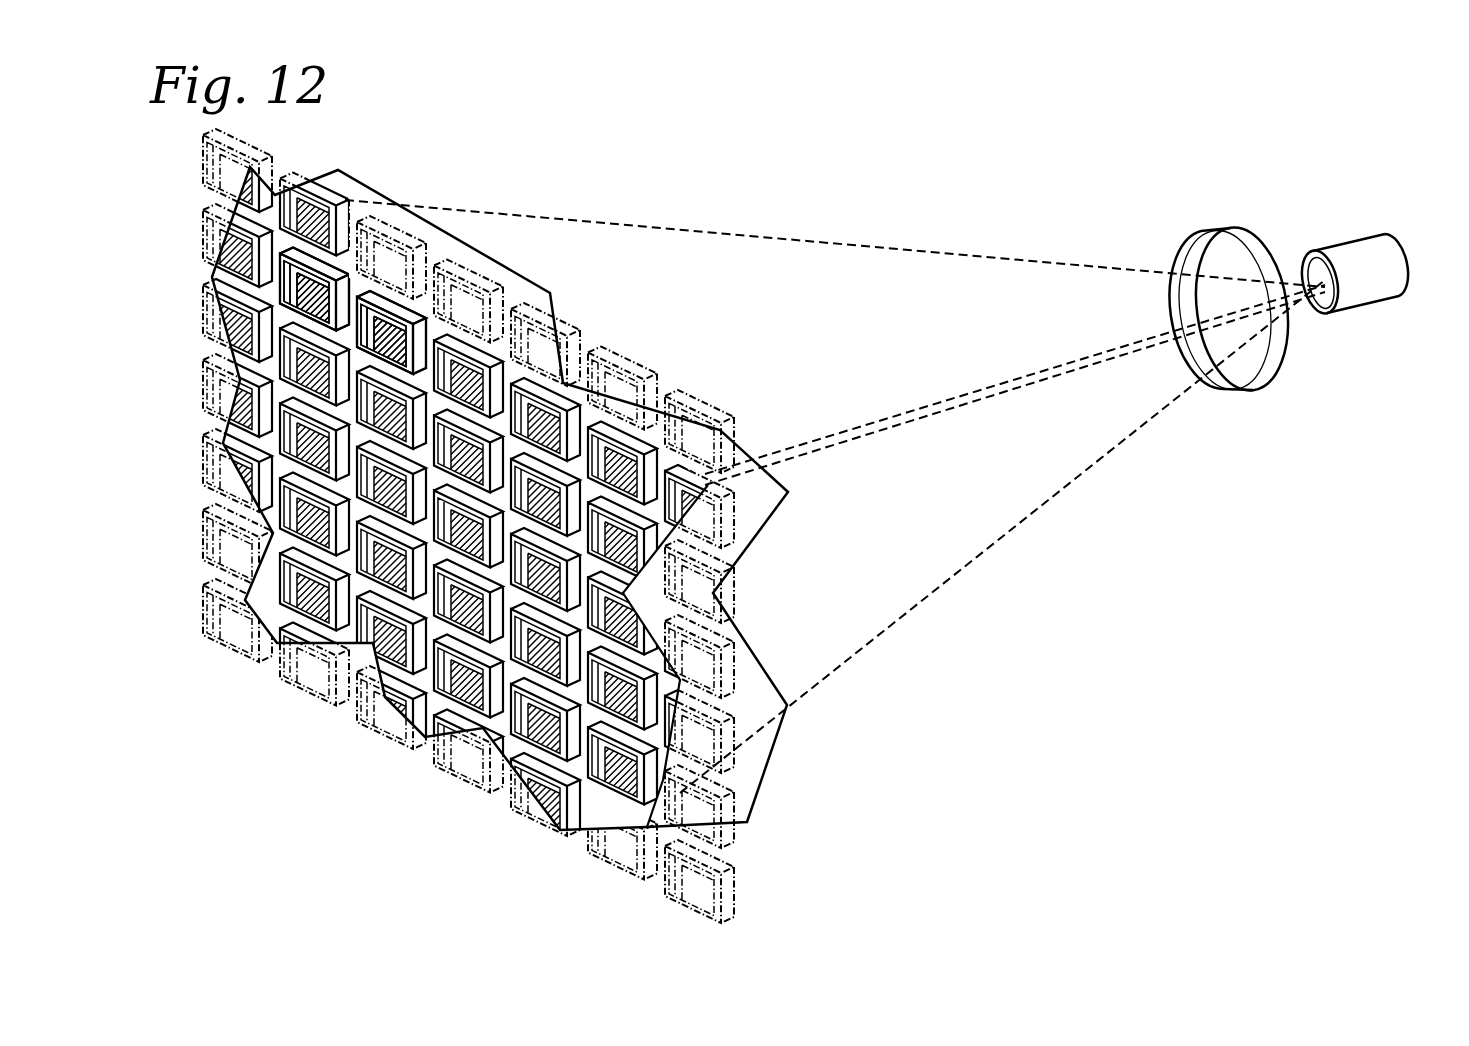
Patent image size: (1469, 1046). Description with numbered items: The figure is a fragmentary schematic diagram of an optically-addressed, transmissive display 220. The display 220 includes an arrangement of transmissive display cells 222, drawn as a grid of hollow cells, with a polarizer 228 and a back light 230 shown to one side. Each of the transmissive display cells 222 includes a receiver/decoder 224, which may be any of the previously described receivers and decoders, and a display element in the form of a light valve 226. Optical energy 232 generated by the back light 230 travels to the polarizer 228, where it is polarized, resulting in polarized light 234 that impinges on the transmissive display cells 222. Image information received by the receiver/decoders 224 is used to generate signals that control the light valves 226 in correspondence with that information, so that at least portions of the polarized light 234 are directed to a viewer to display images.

The optically-addressed, transmissive display 220 is at (1128, 603).
The transmissive display cells 222 is at (327, 273).
The receiver/decoder 224 is at (363, 310).
The light valve 226 is at (460, 383).
The polarizer 228 is at (1222, 230).
The back light 230 is at (1370, 232).
The optical energy 232 is at (1300, 312).
The polarized light 234 is at (836, 248).